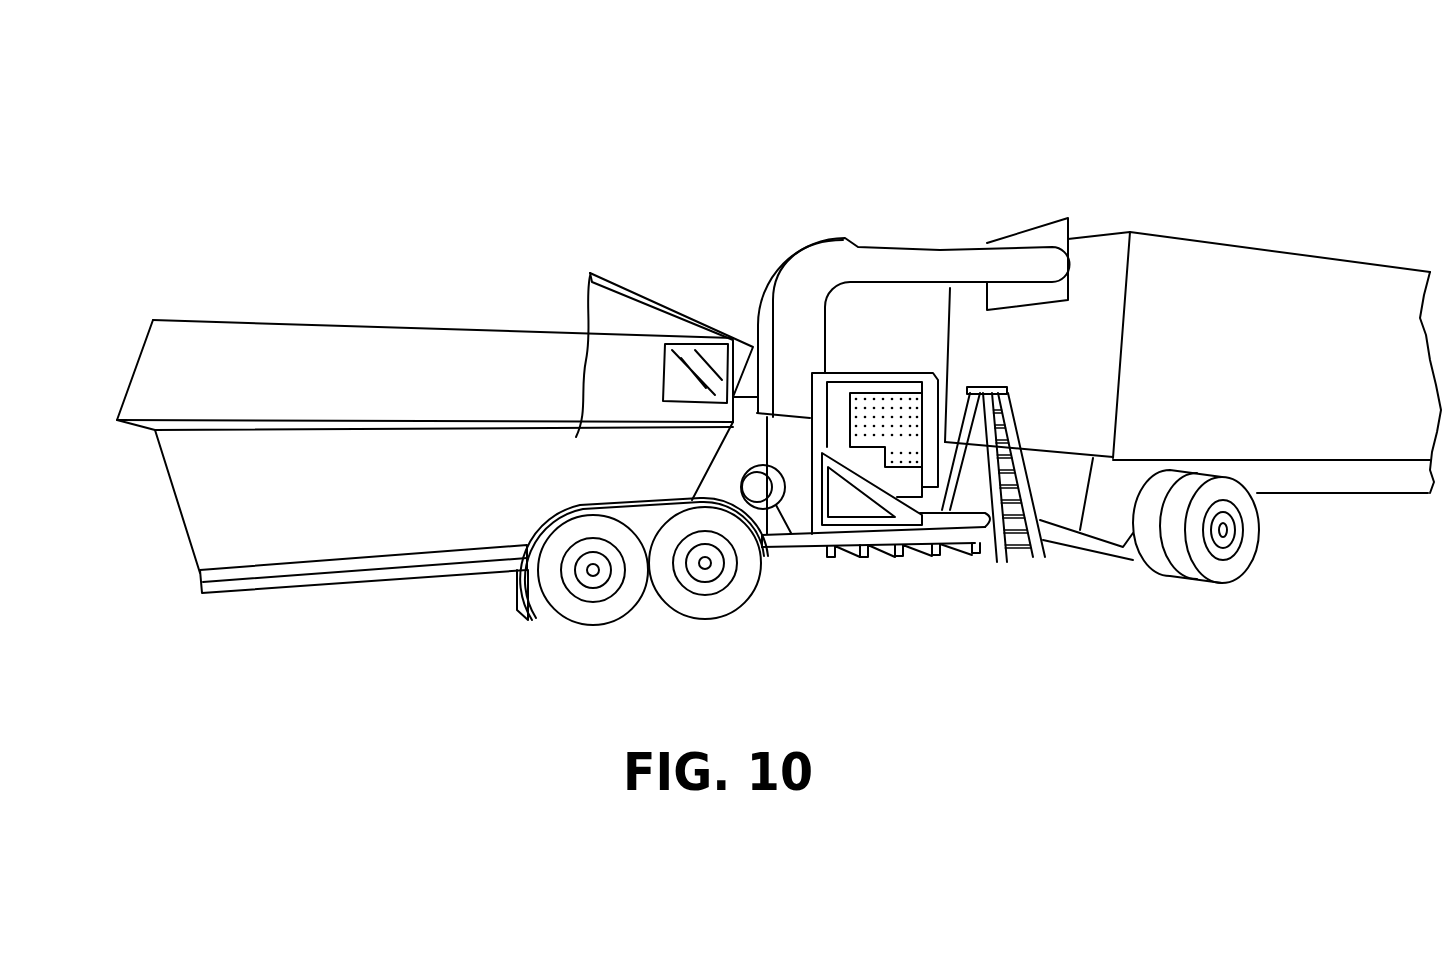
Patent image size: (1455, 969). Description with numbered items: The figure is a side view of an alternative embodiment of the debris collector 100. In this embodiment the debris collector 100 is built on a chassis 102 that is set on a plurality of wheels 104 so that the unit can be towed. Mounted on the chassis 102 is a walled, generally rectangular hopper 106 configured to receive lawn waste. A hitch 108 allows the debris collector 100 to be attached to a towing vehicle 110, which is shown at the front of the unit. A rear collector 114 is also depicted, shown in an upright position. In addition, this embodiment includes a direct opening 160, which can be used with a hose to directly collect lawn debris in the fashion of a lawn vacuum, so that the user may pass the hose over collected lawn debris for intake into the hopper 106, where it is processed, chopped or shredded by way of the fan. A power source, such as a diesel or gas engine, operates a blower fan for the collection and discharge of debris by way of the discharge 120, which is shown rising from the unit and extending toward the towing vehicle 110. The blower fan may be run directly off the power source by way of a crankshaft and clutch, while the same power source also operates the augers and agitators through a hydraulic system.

The debris collector 100 is at (756, 176).
The chassis 102 is at (210, 577).
The wheels 104 is at (552, 588).
The hopper 106 is at (188, 483).
The hitch 108 is at (1043, 547).
The towing vehicle 110 is at (1411, 277).
The rear collector 114 is at (157, 372).
The discharge 120 is at (940, 250).
The direct opening 160 is at (796, 534).